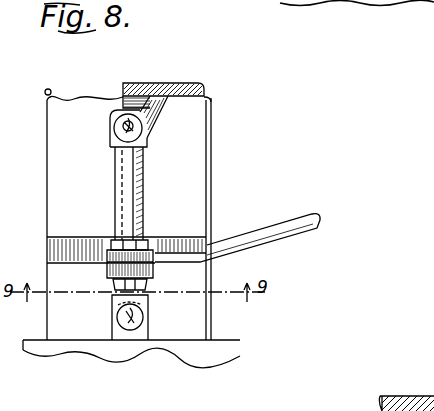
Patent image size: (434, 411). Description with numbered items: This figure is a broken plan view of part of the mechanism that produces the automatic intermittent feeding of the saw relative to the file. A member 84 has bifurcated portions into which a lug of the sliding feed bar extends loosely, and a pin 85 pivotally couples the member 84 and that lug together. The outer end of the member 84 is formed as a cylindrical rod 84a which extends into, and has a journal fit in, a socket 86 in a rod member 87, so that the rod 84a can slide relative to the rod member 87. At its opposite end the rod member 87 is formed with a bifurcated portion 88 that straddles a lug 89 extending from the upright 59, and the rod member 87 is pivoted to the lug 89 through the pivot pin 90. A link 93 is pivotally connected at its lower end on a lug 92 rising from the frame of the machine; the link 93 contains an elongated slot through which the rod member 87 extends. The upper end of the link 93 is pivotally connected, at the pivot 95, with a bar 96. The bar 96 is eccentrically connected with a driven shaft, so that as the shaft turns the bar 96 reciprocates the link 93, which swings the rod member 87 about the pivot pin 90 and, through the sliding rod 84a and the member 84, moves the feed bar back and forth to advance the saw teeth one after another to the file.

The upright 59 is at (176, 92).
The lug 89 is at (122, 95).
The bifurcated portion 88 is at (109, 119).
The pivot pin 90 is at (112, 144).
The rod member 87 is at (146, 189).
The cylindrical rod 84a is at (140, 206).
The socket 86 is at (145, 222).
The lug 92 is at (78, 246).
The link 93 is at (106, 274).
The pivot connection 95 is at (148, 287).
The bar 96 is at (297, 223).
The member 84 is at (111, 301).
The pin 85 is at (135, 342).